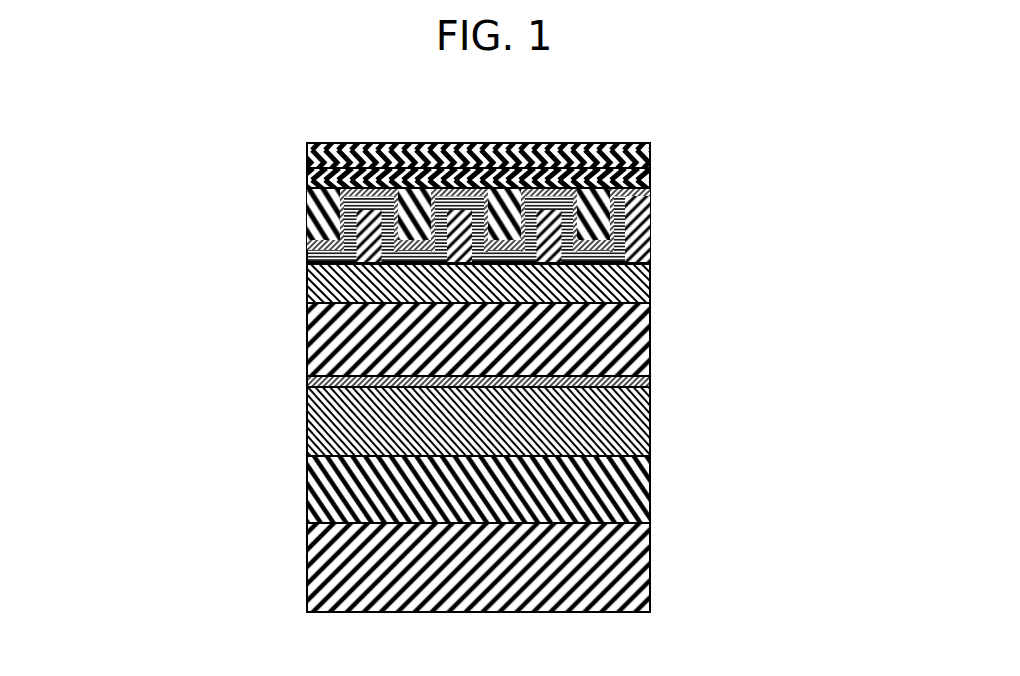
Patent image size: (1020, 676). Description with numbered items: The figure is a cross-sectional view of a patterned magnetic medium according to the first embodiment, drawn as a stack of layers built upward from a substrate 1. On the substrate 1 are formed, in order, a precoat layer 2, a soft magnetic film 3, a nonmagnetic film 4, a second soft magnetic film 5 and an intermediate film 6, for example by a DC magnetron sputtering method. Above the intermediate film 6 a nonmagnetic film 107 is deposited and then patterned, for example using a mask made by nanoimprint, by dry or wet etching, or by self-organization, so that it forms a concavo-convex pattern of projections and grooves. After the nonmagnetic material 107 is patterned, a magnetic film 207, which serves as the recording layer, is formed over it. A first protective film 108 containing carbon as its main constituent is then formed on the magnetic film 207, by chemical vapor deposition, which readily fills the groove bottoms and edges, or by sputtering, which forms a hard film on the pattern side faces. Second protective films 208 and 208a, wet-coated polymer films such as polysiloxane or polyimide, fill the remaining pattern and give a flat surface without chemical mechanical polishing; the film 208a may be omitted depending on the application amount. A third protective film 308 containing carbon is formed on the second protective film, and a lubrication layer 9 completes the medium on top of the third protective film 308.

The substrate 1 is at (617, 548).
The precoat layer 2 is at (650, 480).
The soft magnetic film 3 is at (510, 421).
The nonmagnetic film 4 is at (650, 381).
The soft magnetic film 5 is at (650, 343).
The intermediate film 6 is at (650, 290).
The lubrication layer 9 is at (637, 143).
The nonmagnetic film 107 is at (650, 248).
The first protective film 108 is at (307, 248).
The magnetic film 207 is at (650, 197).
The second protective film 208 is at (307, 225).
The second protective film 208a is at (307, 193).
The third protective film 308 is at (307, 162).